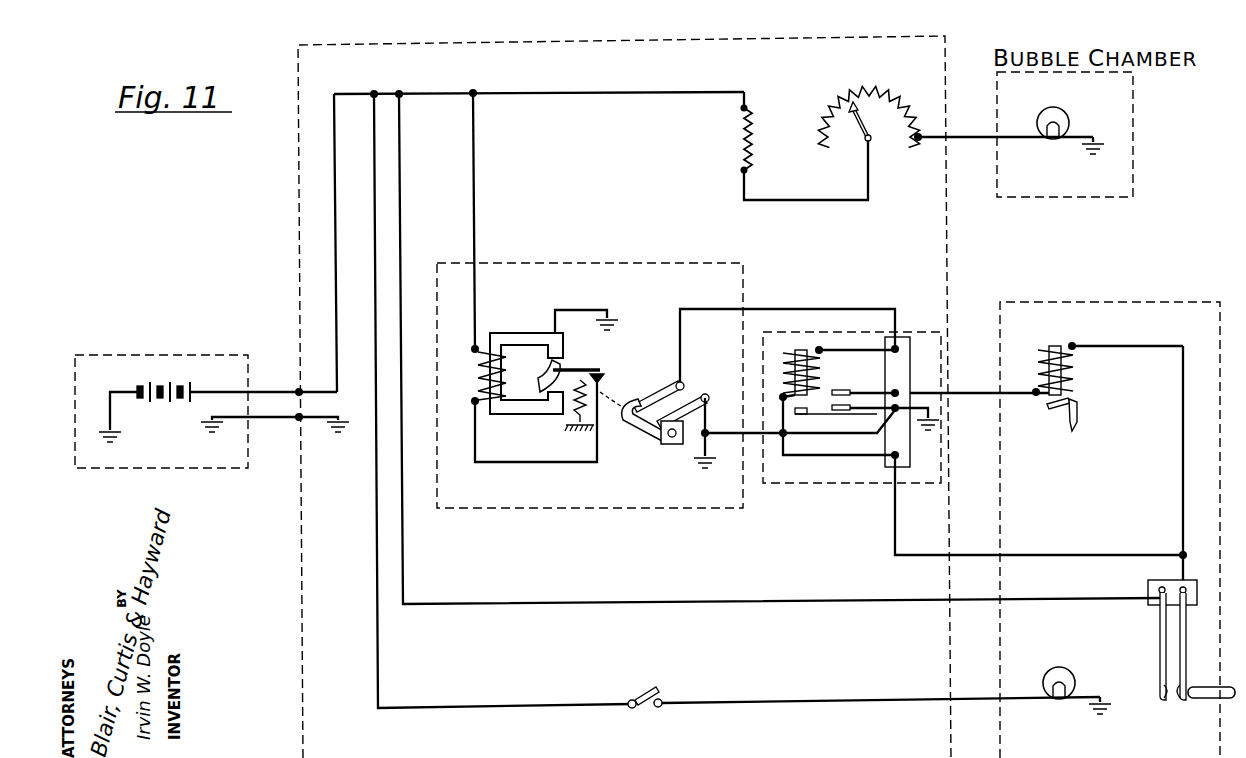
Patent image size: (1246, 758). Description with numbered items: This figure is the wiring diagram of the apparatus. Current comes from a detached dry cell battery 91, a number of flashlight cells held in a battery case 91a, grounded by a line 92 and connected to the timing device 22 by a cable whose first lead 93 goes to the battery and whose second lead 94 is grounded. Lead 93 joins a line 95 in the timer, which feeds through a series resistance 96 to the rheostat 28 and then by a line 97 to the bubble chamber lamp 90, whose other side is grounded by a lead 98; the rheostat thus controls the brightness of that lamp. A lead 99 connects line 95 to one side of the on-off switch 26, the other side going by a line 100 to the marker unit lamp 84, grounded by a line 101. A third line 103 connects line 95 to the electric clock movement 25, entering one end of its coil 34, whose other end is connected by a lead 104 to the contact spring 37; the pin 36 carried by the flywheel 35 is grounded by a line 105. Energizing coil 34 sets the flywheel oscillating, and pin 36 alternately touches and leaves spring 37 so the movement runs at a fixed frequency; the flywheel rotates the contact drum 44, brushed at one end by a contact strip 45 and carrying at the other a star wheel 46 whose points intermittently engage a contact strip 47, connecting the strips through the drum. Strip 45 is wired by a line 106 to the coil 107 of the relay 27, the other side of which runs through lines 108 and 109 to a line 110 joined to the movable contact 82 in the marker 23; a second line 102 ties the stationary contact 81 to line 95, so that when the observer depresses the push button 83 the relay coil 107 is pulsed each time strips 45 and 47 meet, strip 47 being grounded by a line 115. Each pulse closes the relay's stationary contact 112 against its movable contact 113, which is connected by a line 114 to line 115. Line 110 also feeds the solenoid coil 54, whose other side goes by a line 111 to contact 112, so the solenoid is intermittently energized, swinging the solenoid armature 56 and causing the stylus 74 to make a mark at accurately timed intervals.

The timing device 22 is at (260, 607).
The line 95 is at (598, 93).
The line 103 is at (477, 172).
The series resistance 96 is at (750, 130).
The rheostat 28 is at (878, 104).
The line 97 is at (976, 142).
The bubble chamber lamp 90 is at (1068, 115).
The lead 98 is at (1080, 136).
The battery case 91a is at (113, 355).
The dry cell battery 91 is at (165, 385).
The line 92 is at (108, 423).
The cable lead 93 is at (264, 388).
The cable lead 94 is at (270, 420).
The electric clock movement 25 is at (590, 371).
The coil 34 is at (508, 355).
The flywheel 35 is at (548, 380).
The pin 36 is at (590, 372).
The contact spring 37 is at (604, 378).
The lead 104 is at (518, 466).
The line 105 is at (583, 309).
The line 106 is at (698, 308).
The contact strip 45 is at (666, 383).
The contact strip 47 is at (694, 398).
The contact drum 44 is at (643, 442).
The star wheel 46 is at (668, 446).
The line 115 is at (707, 416).
The relay 27 is at (828, 511).
The coil 107 is at (812, 381).
The stationary contact 112 is at (845, 392).
The movable contact 113 is at (836, 414).
The line 114 is at (815, 433).
The line 108 is at (820, 456).
The line 111 is at (978, 396).
The line 109 is at (897, 527).
The marker 23 is at (1110, 516).
The solenoid coil 54 is at (1068, 379).
The solenoid armature 56 is at (1075, 406).
The stylus 74 is at (1073, 431).
The line 110 is at (1183, 497).
The line 102 is at (405, 557).
The lead 99 is at (385, 635).
The on-off switch 26 is at (645, 695).
The line 100 is at (778, 699).
The line 101 is at (1088, 690).
The marker unit lamp 84 is at (1053, 702).
The stationary contact 81 is at (1160, 676).
The movable contact 82 is at (1188, 657).
The push button 83 is at (1210, 702).